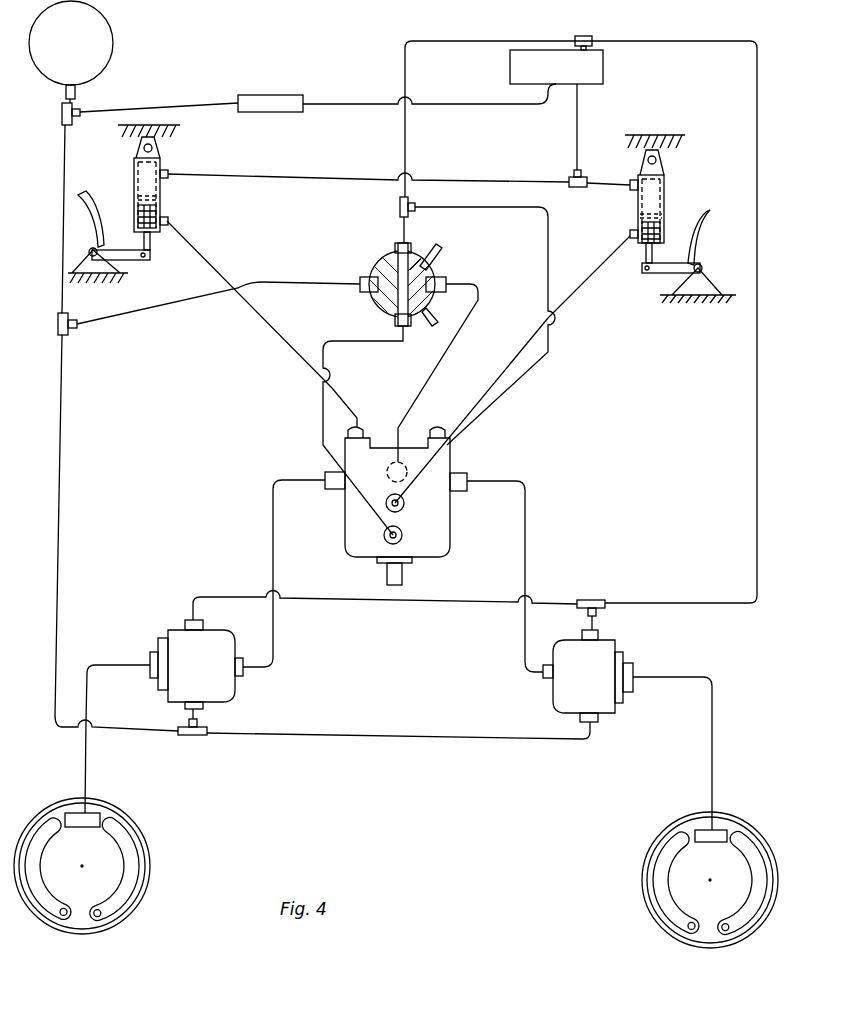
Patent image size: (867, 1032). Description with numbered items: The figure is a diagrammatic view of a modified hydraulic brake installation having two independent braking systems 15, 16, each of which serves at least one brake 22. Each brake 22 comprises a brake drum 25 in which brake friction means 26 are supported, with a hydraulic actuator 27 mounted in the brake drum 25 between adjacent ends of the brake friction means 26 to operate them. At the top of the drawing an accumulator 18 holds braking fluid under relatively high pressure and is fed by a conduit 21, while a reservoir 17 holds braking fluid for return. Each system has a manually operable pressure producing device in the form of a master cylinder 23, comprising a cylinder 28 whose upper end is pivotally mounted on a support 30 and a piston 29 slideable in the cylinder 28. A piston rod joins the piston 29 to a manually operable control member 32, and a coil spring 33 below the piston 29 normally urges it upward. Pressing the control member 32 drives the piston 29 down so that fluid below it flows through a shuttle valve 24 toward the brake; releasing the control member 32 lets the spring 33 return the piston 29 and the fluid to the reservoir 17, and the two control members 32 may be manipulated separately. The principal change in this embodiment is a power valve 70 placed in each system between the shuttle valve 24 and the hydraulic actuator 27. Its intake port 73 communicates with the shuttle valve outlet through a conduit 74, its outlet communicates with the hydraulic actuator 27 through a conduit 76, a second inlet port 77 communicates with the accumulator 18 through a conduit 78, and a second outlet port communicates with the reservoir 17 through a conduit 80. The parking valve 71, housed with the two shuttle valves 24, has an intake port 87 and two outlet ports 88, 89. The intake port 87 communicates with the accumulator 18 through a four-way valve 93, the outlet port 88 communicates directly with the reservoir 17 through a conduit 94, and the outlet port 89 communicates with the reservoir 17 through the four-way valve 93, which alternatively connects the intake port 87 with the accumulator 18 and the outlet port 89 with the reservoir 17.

The accumulator 18 is at (113, 54).
The conduit 21 is at (360, 92).
The reservoir 17 is at (596, 78).
The support 30 is at (178, 128).
The cylinder 28 is at (397, 200).
The master cylinder 23 is at (166, 190).
The piston 29 is at (152, 206).
The coil spring 33 is at (137, 217).
The manually operable control member 32 is at (130, 258).
The braking system 15 is at (271, 328).
The braking system 16 is at (570, 300).
The conduit 94 is at (403, 229).
The four-way valve 93 is at (437, 271).
The shuttle valve 24 is at (360, 426).
The intake port 87 is at (405, 460).
The outlet port 88 is at (405, 503).
The outlet port 89 is at (403, 538).
The parking valve 71 is at (409, 489).
The conduit 74 is at (272, 545).
The conduit 80 is at (751, 446).
The power valve 70 is at (393, 657).
The intake port 73 is at (243, 660).
The second inlet port 77 is at (201, 706).
The conduit 78 is at (140, 726).
The conduit 76 is at (93, 760).
The hydraulic actuator 27 is at (86, 822).
The brake drum 25 is at (148, 830).
The brake 22 is at (396, 864).
The brake friction means 26 is at (118, 897).